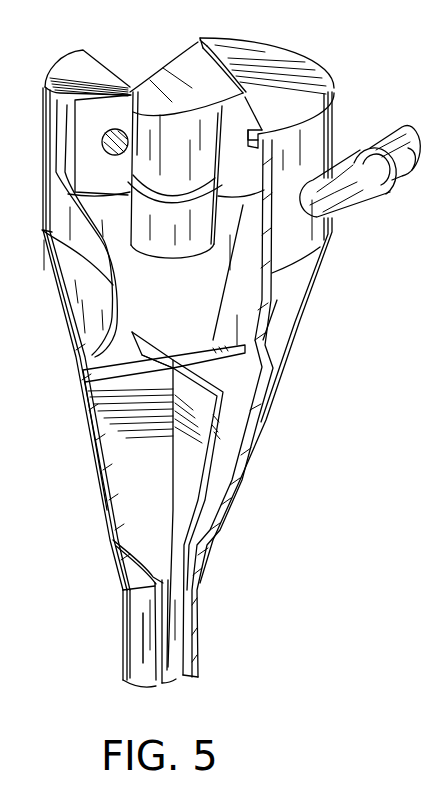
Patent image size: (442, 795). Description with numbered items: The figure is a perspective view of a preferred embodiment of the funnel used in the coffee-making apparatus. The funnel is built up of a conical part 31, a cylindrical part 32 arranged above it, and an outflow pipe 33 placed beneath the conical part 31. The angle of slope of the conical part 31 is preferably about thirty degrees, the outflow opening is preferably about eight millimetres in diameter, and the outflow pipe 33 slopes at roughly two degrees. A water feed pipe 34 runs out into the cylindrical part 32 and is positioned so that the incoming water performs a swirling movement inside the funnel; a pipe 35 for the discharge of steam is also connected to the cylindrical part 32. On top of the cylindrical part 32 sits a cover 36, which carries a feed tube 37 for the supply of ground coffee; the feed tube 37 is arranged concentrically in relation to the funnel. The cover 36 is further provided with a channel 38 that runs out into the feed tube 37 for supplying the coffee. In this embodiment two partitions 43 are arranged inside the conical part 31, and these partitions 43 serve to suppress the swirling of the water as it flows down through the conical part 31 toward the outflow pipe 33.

The conical part 31 is at (256, 415).
The cylindrical part 32 is at (323, 116).
The outflow pipe 33 is at (172, 673).
The water feed pipe 34 is at (360, 193).
The pipe for the discharge of steam 35 is at (104, 134).
The cover 36 is at (266, 62).
The feed tube 37 is at (160, 157).
The channel 38 is at (180, 78).
The partitions 43 is at (225, 430).